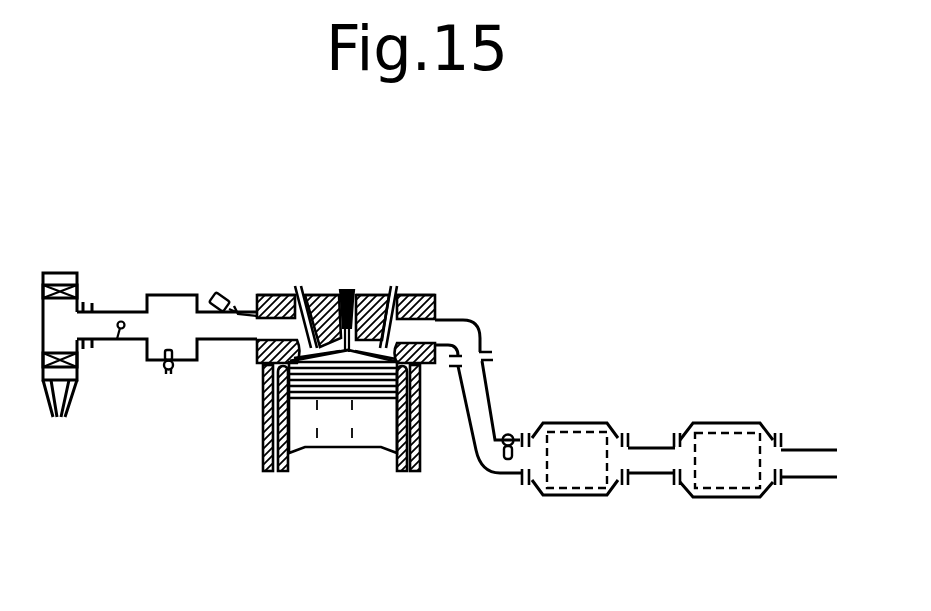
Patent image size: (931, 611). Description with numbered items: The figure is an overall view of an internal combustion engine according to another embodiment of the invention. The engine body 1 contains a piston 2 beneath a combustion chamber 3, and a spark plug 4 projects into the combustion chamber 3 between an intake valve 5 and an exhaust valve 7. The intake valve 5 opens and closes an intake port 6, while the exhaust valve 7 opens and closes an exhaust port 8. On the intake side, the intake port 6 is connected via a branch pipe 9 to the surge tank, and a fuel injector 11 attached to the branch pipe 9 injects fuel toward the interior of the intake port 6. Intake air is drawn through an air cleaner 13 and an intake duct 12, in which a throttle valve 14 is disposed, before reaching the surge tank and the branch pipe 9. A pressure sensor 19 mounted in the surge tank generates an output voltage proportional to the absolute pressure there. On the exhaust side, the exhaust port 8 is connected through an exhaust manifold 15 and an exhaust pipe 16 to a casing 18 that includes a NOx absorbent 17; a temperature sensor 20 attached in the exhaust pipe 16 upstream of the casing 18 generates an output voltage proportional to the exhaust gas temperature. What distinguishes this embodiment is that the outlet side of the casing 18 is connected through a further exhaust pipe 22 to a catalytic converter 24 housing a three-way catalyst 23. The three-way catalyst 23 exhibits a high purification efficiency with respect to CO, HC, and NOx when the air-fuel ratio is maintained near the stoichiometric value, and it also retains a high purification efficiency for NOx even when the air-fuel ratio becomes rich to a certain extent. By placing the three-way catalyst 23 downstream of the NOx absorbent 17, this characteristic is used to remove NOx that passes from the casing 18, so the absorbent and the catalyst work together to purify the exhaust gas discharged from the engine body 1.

The engine body 1 is at (425, 447).
The piston 2 is at (345, 449).
The combustion chamber 3 is at (345, 365).
The spark plug 4 is at (353, 296).
The intake valve 5 is at (298, 288).
The intake port 6 is at (272, 323).
The exhaust valve 7 is at (401, 292).
The exhaust port 8 is at (438, 322).
The branch pipe 9 is at (221, 341).
The fuel injector 11 is at (222, 292).
The intake duct 12 is at (107, 310).
The air cleaner 13 is at (60, 273).
The throttle valve 14 is at (122, 321).
The exhaust manifold 15 is at (475, 328).
The exhaust pipe 16 is at (485, 380).
The NOx absorbent 17 is at (590, 431).
The casing 18 is at (577, 497).
The pressure sensor 19 is at (165, 371).
The temperature sensor 20 is at (508, 433).
The exhaust pipe 22 is at (653, 448).
The three-way catalyst 23 is at (737, 432).
The catalytic converter 24 is at (727, 498).